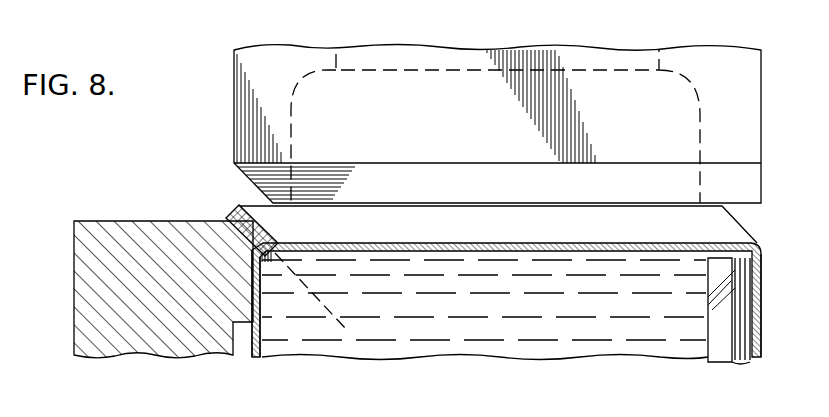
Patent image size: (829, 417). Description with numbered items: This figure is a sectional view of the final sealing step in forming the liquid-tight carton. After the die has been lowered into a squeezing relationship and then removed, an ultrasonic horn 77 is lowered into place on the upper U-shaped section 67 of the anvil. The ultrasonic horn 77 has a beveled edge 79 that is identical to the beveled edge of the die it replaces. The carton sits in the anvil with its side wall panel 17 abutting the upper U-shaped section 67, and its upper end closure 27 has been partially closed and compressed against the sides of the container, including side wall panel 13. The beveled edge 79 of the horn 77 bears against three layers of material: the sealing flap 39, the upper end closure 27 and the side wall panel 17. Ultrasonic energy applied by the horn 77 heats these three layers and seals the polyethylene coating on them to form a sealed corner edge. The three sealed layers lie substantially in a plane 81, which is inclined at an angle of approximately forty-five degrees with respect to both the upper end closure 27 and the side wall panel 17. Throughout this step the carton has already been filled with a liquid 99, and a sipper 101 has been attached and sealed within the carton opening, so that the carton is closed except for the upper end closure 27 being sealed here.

The ultrasonic horn 77 is at (276, 55).
The beveled edge 79 is at (247, 178).
The upper U-shaped section 67 is at (152, 219).
The upper end closure 27 is at (520, 243).
The sealing flap 39 is at (254, 231).
The side wall panel 17 is at (256, 342).
The liquid 99 is at (491, 334).
The plane 81 is at (330, 310).
The sipper 101 is at (720, 350).
The side wall panel 13 is at (763, 344).